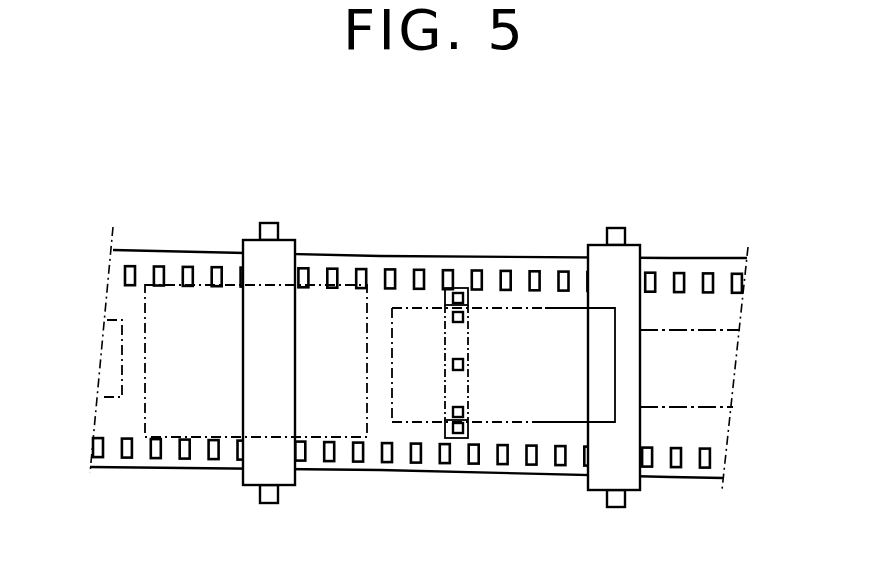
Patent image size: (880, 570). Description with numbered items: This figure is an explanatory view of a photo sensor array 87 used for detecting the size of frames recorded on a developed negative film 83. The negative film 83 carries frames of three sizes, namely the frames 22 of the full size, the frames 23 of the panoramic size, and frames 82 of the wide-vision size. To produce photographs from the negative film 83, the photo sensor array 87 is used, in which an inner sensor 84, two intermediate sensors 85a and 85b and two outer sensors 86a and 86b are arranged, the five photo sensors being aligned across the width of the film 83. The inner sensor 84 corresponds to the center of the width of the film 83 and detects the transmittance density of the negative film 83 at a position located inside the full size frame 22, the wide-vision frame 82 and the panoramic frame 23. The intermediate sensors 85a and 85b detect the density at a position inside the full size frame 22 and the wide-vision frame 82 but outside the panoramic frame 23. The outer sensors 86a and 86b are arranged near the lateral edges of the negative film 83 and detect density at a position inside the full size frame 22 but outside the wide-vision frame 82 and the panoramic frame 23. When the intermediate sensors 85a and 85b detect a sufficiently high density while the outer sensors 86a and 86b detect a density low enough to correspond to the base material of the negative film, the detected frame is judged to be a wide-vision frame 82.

The full size frame 22 is at (177, 417).
The panoramic size frame 23 is at (688, 330).
The wide-vision size frame 82 is at (388, 405).
The negative film 83 is at (138, 250).
The inner sensor 84 is at (464, 365).
The intermediate sensor 85a is at (451, 311).
The intermediate sensor 85b is at (464, 412).
The outer sensor 86a is at (458, 293).
The outer sensor 86b is at (458, 438).
The photo sensor array 87 is at (466, 430).